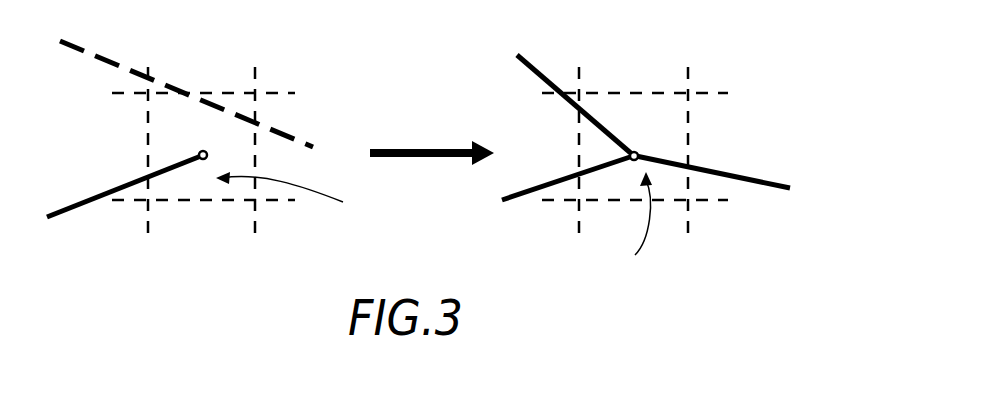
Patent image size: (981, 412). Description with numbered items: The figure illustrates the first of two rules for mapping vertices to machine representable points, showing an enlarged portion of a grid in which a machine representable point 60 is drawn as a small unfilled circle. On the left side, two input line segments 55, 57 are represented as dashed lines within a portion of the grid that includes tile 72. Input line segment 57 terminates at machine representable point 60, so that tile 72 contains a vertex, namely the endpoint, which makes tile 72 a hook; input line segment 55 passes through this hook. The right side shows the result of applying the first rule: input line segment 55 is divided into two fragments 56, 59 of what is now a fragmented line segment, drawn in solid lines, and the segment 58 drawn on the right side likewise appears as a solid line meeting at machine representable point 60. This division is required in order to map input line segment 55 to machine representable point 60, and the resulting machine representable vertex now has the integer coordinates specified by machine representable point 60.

The input line segment 55 is at (108, 56).
The fragment 56 is at (542, 72).
The input line segment 57 is at (77, 208).
The second line segment 58 is at (525, 198).
The fragment 59 is at (743, 172).
The machine representable point 60 is at (199, 152).
The tile 72 is at (434, 222).